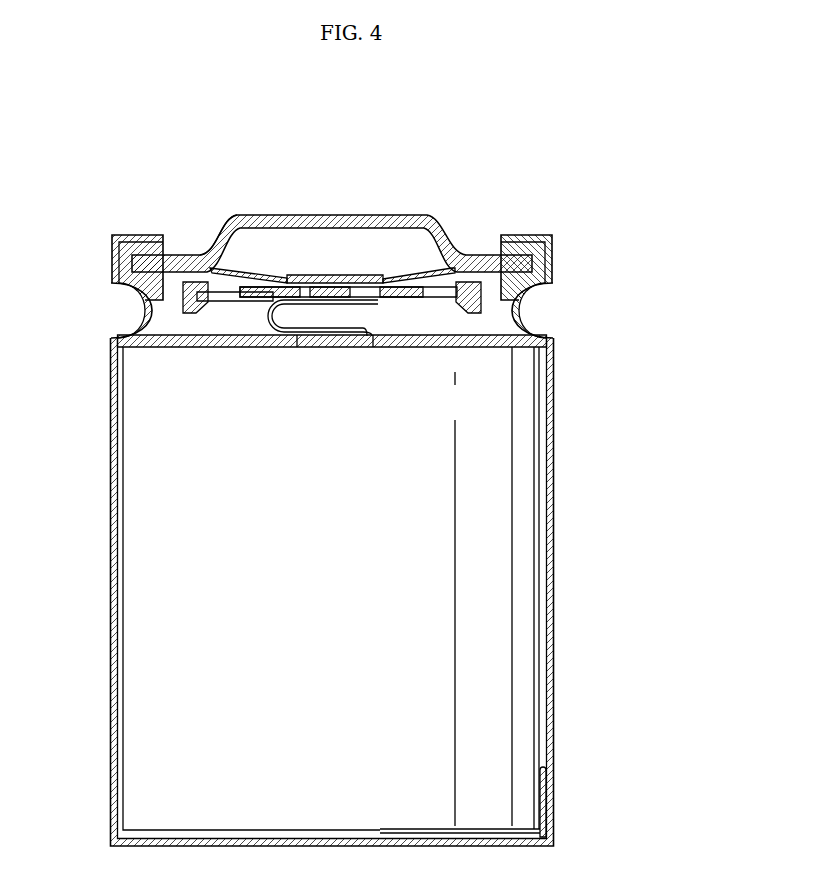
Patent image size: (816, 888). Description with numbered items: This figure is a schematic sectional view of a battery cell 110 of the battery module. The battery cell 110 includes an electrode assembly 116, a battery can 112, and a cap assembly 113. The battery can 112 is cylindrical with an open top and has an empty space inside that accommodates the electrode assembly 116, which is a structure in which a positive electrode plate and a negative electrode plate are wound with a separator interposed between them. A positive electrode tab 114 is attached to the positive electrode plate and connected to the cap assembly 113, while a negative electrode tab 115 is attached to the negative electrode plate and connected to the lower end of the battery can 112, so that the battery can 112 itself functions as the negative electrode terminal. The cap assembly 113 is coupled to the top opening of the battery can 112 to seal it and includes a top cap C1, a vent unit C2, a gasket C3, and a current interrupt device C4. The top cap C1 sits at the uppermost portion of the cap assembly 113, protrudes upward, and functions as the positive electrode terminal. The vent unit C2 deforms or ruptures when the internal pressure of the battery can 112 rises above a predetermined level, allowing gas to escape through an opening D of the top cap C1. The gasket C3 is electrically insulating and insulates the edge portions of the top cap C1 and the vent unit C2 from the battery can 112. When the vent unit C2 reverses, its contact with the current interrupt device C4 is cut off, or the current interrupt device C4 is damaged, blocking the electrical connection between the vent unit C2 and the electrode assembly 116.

The battery cell 110 is at (259, 150).
The battery can 112 is at (553, 476).
The cap assembly 113 is at (525, 165).
The positive electrode tab 114 is at (268, 315).
The negative electrode tab 115 is at (548, 793).
The electrode assembly 116 is at (525, 448).
The top cap C1 is at (386, 214).
The vent unit C2 is at (408, 270).
The gasket C3 is at (519, 243).
The current interrupt device C4 is at (445, 284).
The opening D is at (209, 234).